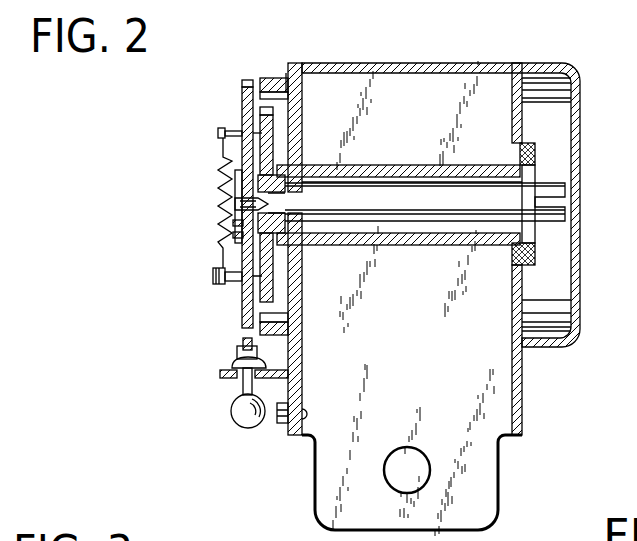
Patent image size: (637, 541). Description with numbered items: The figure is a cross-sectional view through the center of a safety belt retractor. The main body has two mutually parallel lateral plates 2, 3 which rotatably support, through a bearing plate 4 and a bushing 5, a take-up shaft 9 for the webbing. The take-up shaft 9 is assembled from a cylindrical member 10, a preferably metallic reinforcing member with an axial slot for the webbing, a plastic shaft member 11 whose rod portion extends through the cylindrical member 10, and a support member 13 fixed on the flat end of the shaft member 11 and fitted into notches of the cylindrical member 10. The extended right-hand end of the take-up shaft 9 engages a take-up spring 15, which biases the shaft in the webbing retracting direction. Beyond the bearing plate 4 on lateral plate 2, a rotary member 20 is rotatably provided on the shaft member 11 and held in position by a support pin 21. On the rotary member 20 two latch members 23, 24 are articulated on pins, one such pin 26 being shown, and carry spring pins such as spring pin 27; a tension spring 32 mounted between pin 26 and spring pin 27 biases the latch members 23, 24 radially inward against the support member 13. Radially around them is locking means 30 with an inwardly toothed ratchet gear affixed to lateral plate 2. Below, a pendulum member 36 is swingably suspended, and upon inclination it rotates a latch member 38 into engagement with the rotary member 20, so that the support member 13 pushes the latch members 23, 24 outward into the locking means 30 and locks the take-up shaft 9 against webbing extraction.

The lateral plate 2 is at (297, 62).
The lateral plate 3 is at (516, 63).
The bearing plate 4 is at (289, 77).
The bushing 5 is at (530, 143).
The take-up shaft 9 is at (408, 150).
The cylindrical member 10 is at (473, 165).
The shaft member 11 is at (417, 200).
The support member 13 is at (282, 212).
The take-up spring 15 is at (558, 318).
The rotary member 20 is at (241, 107).
The support pin 21 is at (242, 212).
The latch member 23 is at (262, 131).
The latch member 24 is at (262, 276).
The pin 26 is at (213, 276).
The spring pin 27 is at (218, 133).
The locking means 30 is at (270, 78).
The tension spring 32 is at (248, 203).
The pendulum member 36 is at (245, 428).
The latch member 38 is at (242, 343).